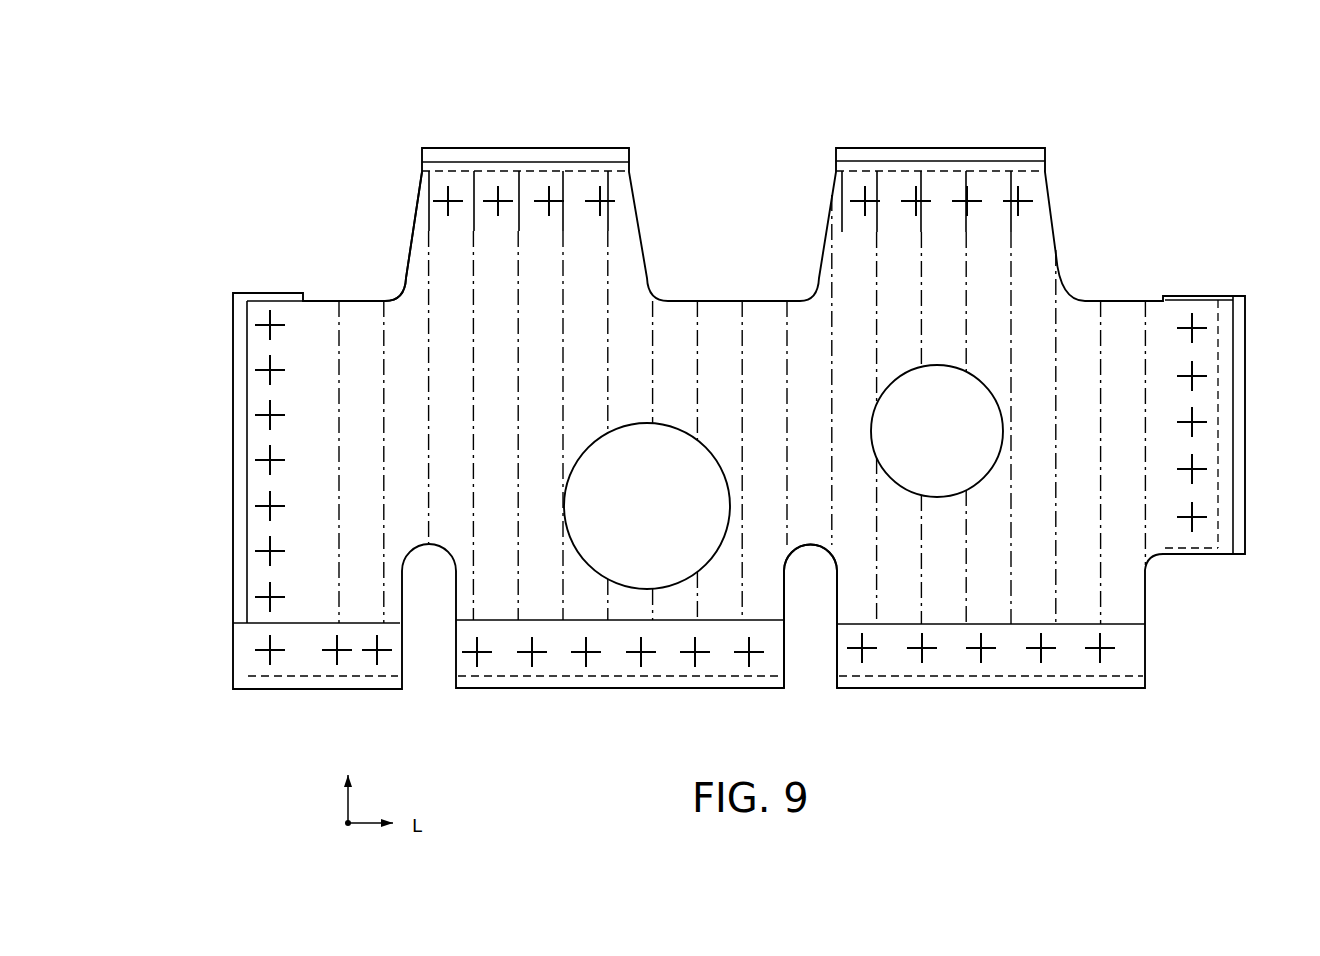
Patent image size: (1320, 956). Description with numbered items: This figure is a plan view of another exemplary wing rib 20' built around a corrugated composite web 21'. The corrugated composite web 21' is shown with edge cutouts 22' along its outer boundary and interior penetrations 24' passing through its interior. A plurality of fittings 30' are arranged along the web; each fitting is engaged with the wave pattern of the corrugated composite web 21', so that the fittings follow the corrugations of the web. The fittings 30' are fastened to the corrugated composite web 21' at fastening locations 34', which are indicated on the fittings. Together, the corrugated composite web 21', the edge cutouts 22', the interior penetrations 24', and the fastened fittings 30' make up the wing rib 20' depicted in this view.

The wing rib 20' is at (701, 375).
The corrugated composite web 21' is at (359, 230).
The edge cutouts 22' is at (813, 650).
The interior penetrations 24' is at (783, 477).
The fittings 30' is at (733, 135).
The fastening locations 34' is at (516, 151).